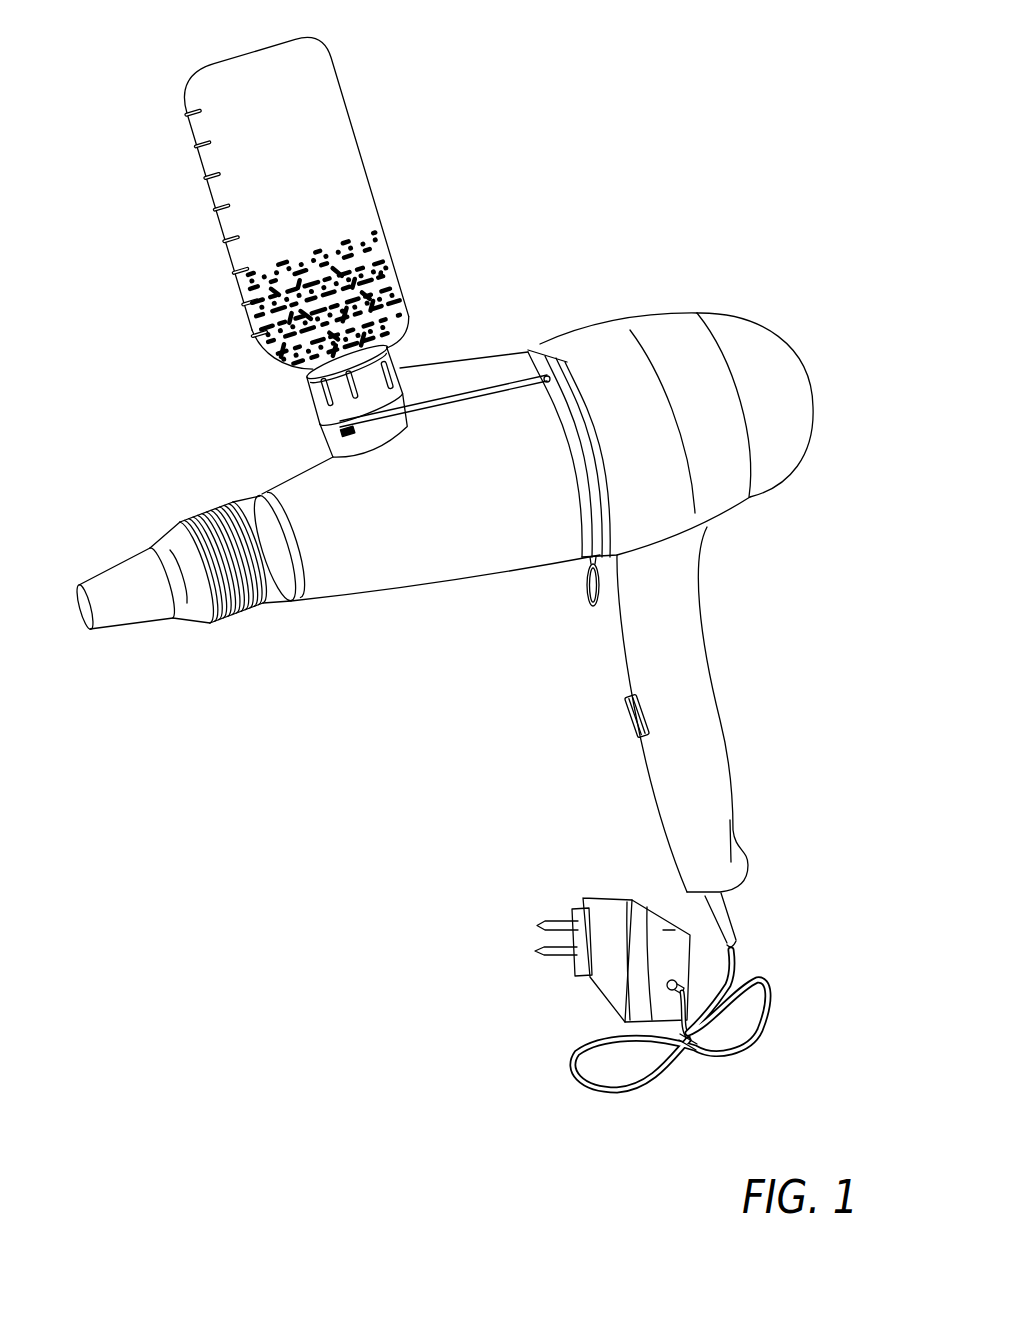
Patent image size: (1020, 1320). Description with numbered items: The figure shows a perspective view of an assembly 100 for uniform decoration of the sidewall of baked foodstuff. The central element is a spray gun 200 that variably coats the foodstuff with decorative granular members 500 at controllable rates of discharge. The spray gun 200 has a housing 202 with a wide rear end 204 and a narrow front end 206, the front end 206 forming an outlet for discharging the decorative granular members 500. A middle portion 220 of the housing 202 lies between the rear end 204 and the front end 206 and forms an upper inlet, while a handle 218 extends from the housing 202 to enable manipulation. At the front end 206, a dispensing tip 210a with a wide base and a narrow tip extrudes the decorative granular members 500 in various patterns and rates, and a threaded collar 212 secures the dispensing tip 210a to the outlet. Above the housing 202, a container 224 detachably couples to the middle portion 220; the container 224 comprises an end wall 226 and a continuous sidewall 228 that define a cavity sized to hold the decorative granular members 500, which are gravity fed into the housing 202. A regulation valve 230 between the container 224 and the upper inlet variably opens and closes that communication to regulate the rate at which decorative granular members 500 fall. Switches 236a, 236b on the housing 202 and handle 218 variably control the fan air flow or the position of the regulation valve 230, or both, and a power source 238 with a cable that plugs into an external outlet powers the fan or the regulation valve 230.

The assembly 100 is at (724, 124).
The spray gun 200 is at (816, 365).
The housing 202 is at (587, 327).
The rear end 204 is at (787, 468).
The front end 206 is at (322, 598).
The dispensing tip 210a is at (140, 628).
The collar 212 is at (230, 625).
The handle 218 is at (715, 650).
The middle portion 220 is at (457, 576).
The container 224 is at (193, 198).
The end wall 226 is at (228, 57).
The continuous sidewall 228 is at (360, 124).
The regulation valve 230 is at (400, 367).
The switch 236a is at (590, 607).
The switch 236b is at (628, 706).
The power source 238 is at (594, 990).
The decorative granular members 500 is at (378, 226).